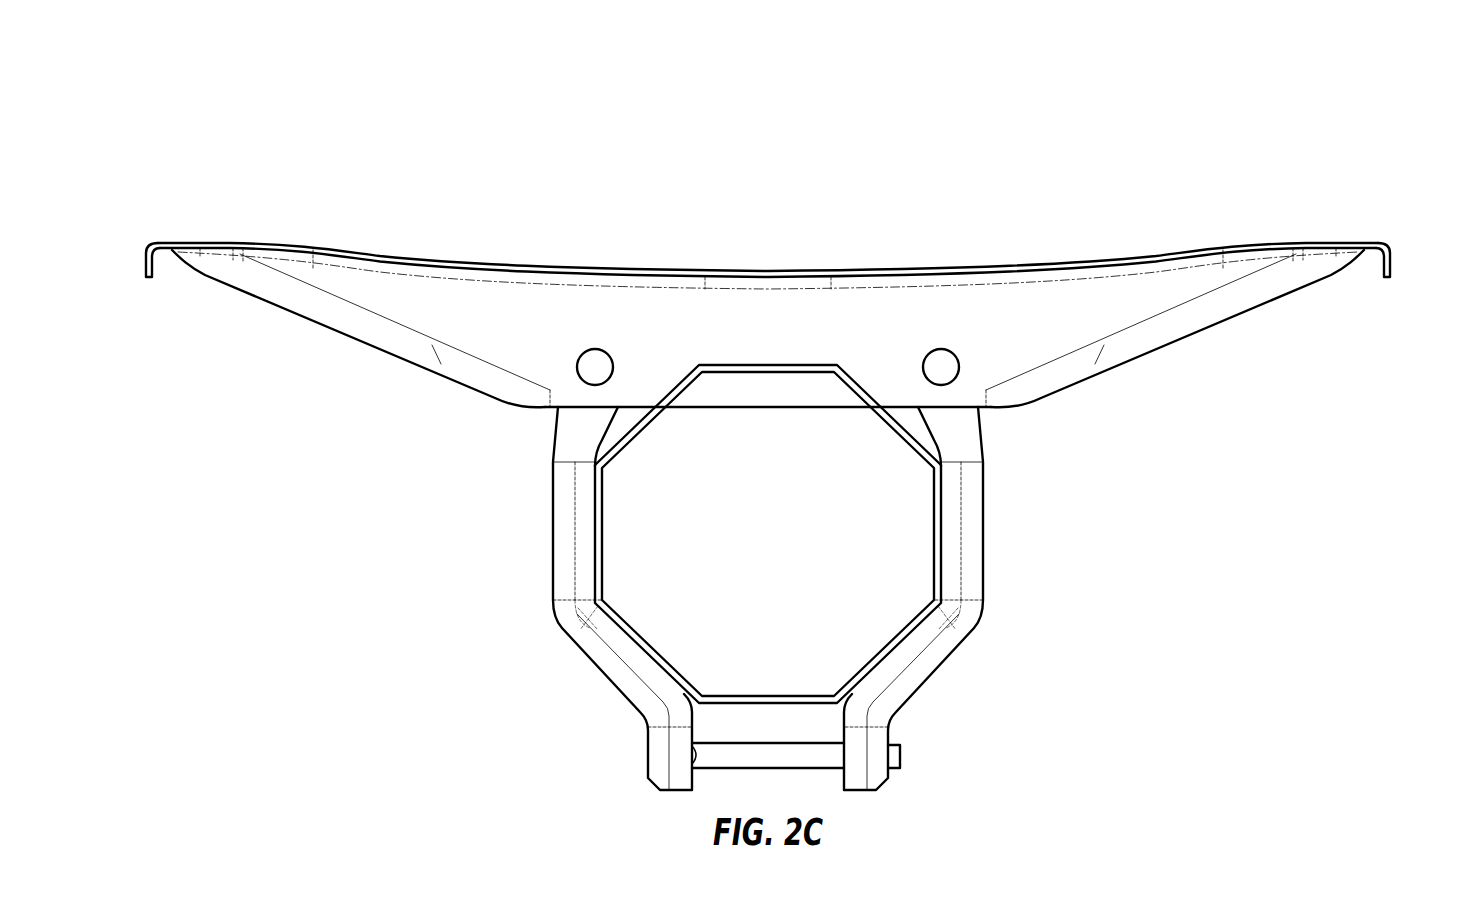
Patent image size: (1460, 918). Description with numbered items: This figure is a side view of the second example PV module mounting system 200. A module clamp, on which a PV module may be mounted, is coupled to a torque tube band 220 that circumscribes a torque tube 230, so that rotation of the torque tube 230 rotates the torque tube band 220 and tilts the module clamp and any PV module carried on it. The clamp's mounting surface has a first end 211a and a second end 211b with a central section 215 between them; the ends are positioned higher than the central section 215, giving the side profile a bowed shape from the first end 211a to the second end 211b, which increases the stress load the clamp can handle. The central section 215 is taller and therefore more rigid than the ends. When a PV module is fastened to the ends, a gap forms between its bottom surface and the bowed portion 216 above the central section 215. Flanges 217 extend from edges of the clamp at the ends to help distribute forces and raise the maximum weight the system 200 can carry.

The PV module mounting system 200 is at (1373, 101).
The first end 211a is at (225, 270).
The second end 211b is at (1311, 270).
The central section 215 is at (766, 290).
The bowed portion 216 is at (861, 242).
The flange 217 is at (150, 256).
The torque tube band 220 is at (983, 533).
The torque tube 230 is at (598, 546).